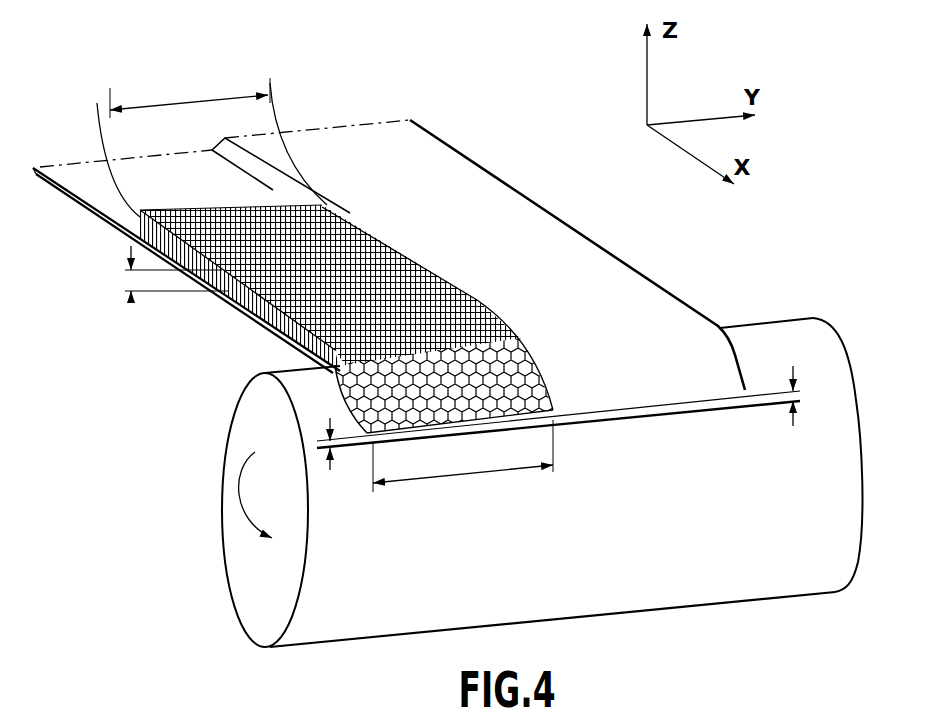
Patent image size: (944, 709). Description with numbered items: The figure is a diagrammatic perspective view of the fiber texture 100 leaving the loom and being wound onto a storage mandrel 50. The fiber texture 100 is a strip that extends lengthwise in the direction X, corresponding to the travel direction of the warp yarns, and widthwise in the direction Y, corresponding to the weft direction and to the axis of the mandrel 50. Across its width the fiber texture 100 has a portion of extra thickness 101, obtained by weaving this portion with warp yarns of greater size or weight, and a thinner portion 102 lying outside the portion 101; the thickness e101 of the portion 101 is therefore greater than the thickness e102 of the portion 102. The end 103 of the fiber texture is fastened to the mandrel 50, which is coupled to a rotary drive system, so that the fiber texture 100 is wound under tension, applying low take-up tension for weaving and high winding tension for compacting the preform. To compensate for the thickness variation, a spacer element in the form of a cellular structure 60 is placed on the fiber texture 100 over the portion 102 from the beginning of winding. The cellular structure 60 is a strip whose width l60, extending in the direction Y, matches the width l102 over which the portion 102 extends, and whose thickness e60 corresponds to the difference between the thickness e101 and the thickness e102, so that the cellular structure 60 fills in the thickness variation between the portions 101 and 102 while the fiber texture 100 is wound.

The storage mandrel 50 is at (747, 580).
The cellular structure 60 is at (263, 319).
The fiber texture 100 is at (500, 156).
The portion of extra thickness 101 is at (567, 240).
The portion of the texture lying outside the portion of extra thickness 102 is at (73, 176).
The end of the fiber texture 103 is at (593, 421).
The thickness of the cellular structure e60 is at (131, 289).
The width of the cellular structure l60 is at (236, 99).
The thickness of the portion of extra thickness e101 is at (793, 370).
The thickness of the portion lying outside the portion of extra thickness e102 is at (330, 421).
The width of the portion lying outside the portion of extra thickness l102 is at (517, 468).